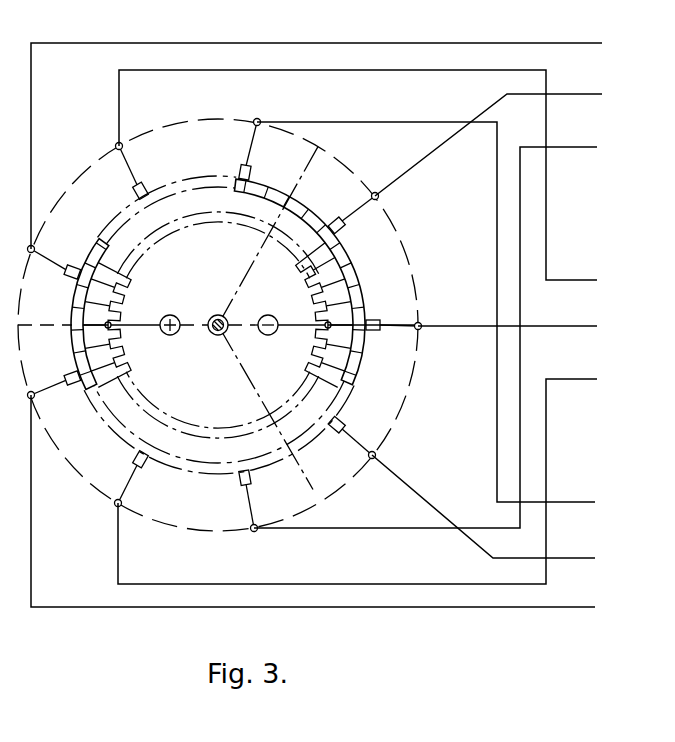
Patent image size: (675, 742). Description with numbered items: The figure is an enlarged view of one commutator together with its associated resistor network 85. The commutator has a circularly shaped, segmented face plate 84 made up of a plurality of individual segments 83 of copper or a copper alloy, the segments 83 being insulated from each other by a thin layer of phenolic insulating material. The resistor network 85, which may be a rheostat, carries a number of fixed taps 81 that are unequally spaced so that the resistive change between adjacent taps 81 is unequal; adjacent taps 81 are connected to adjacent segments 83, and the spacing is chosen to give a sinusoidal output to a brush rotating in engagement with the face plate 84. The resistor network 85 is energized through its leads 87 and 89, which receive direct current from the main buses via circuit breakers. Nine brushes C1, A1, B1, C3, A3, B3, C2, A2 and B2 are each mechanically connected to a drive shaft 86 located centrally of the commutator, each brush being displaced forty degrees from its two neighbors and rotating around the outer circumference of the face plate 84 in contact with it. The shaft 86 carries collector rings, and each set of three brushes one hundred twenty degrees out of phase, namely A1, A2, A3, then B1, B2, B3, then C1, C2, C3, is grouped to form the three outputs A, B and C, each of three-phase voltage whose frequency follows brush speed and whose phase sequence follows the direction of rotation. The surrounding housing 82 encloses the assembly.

The taps 81 is at (322, 377).
The housing 82 is at (460, 254).
The segments 83 is at (360, 305).
The segmented face plate 84 is at (394, 275).
The resistor network 85 is at (320, 313).
The drive shaft 86 is at (214, 315).
The lead 87 is at (168, 335).
The lead 89 is at (266, 335).
The brush A1 is at (374, 335).
The brush A2 is at (137, 463).
The brush A3 is at (146, 180).
The brush B1 is at (350, 229).
The brush B2 is at (245, 484).
The brush B3 is at (74, 264).
The brush C1 is at (334, 432).
The brush C2 is at (76, 389).
The brush C3 is at (258, 172).
The output A is at (631, 340).
The output B is at (631, 109).
The output C is at (631, 574).